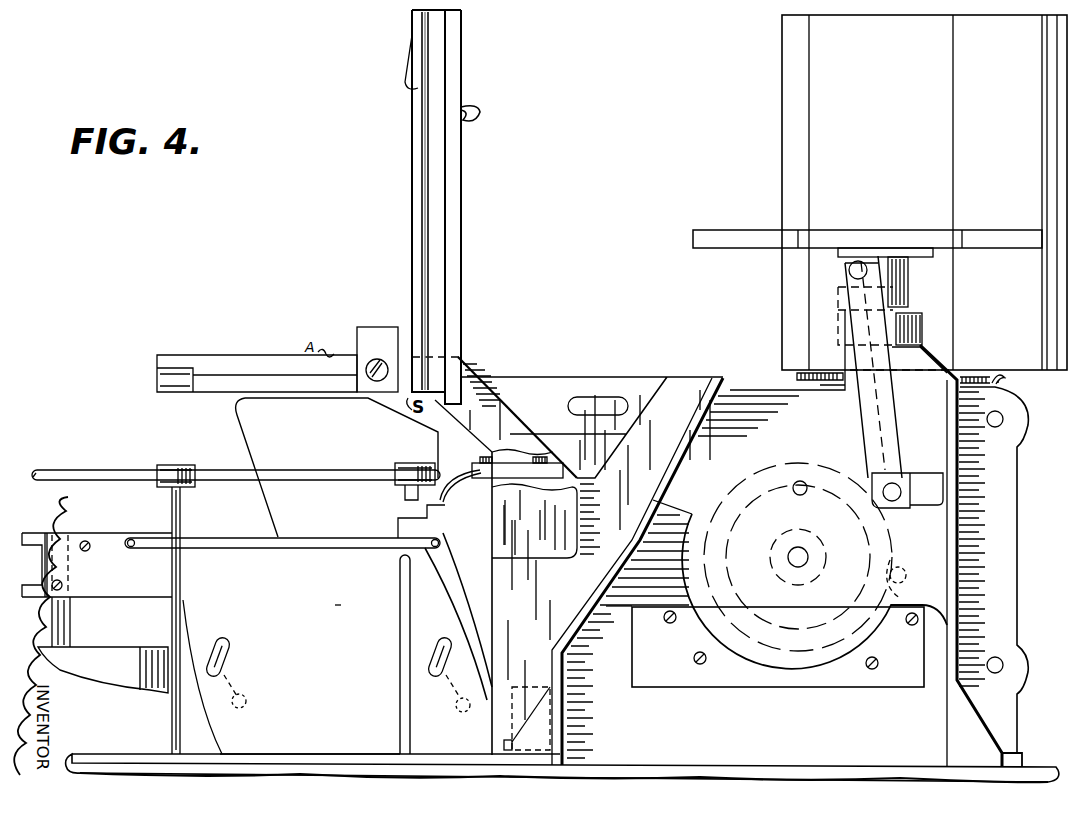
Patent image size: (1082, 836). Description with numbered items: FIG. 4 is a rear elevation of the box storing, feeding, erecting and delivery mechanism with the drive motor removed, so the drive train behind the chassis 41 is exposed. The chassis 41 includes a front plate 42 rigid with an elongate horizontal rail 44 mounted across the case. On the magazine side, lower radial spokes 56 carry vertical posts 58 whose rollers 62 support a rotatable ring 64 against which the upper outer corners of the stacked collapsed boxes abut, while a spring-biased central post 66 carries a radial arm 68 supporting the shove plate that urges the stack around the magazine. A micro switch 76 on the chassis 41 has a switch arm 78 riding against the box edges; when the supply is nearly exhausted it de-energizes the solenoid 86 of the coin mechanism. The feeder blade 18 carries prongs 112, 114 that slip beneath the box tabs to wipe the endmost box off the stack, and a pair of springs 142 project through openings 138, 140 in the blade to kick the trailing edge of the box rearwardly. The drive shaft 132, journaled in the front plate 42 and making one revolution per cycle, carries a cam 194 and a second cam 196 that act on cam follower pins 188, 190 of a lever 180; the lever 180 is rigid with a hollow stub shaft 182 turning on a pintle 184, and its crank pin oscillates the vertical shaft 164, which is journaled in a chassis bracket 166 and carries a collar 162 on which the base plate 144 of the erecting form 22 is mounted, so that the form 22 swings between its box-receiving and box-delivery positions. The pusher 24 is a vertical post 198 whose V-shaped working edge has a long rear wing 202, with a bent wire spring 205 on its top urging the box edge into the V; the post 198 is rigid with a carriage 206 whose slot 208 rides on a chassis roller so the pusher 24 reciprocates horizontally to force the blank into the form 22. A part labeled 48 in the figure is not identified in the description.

The feeder blade 18 is at (245, 420).
The erecting form 22 is at (764, 64).
The pusher 24 is at (440, 207).
The chassis 41 is at (482, 594).
The front plate 42 is at (1005, 470).
The rail 44 is at (1022, 762).
The bracket 48 is at (500, 744).
The radial spoke 56 is at (100, 754).
The vertical post 58 is at (180, 512).
The roller 62 is at (178, 466).
The rotatable ring 64 is at (352, 482).
The central post 66 is at (60, 618).
The radial arm 68 is at (128, 590).
The micro switch 76 is at (472, 466).
The switch arm 78 is at (443, 497).
The solenoid 86 is at (848, 270).
The prong 112 is at (212, 537).
The prong 114 is at (406, 536).
The drive shaft 132 is at (790, 560).
The opening 138 is at (220, 640).
The opening 140 is at (433, 641).
The spring 142 is at (229, 660).
The base plate 144 is at (741, 235).
The collar 162 is at (918, 258).
The vertical shaft 164 is at (895, 392).
The chassis bracket 166 is at (908, 326).
The lever 180 is at (884, 432).
The hollow stub shaft 182 is at (898, 483).
The pintle 184 is at (909, 490).
The cam follower pin 188 is at (904, 572).
The cam follower pin 190 is at (796, 488).
The cam 194 is at (776, 600).
The second cam 196 is at (772, 494).
The vertical post 198 is at (423, 143).
The rear wing 202 is at (447, 152).
The bent wire spring 205 is at (476, 114).
The carriage 206 is at (545, 385).
The slot 208 is at (598, 407).